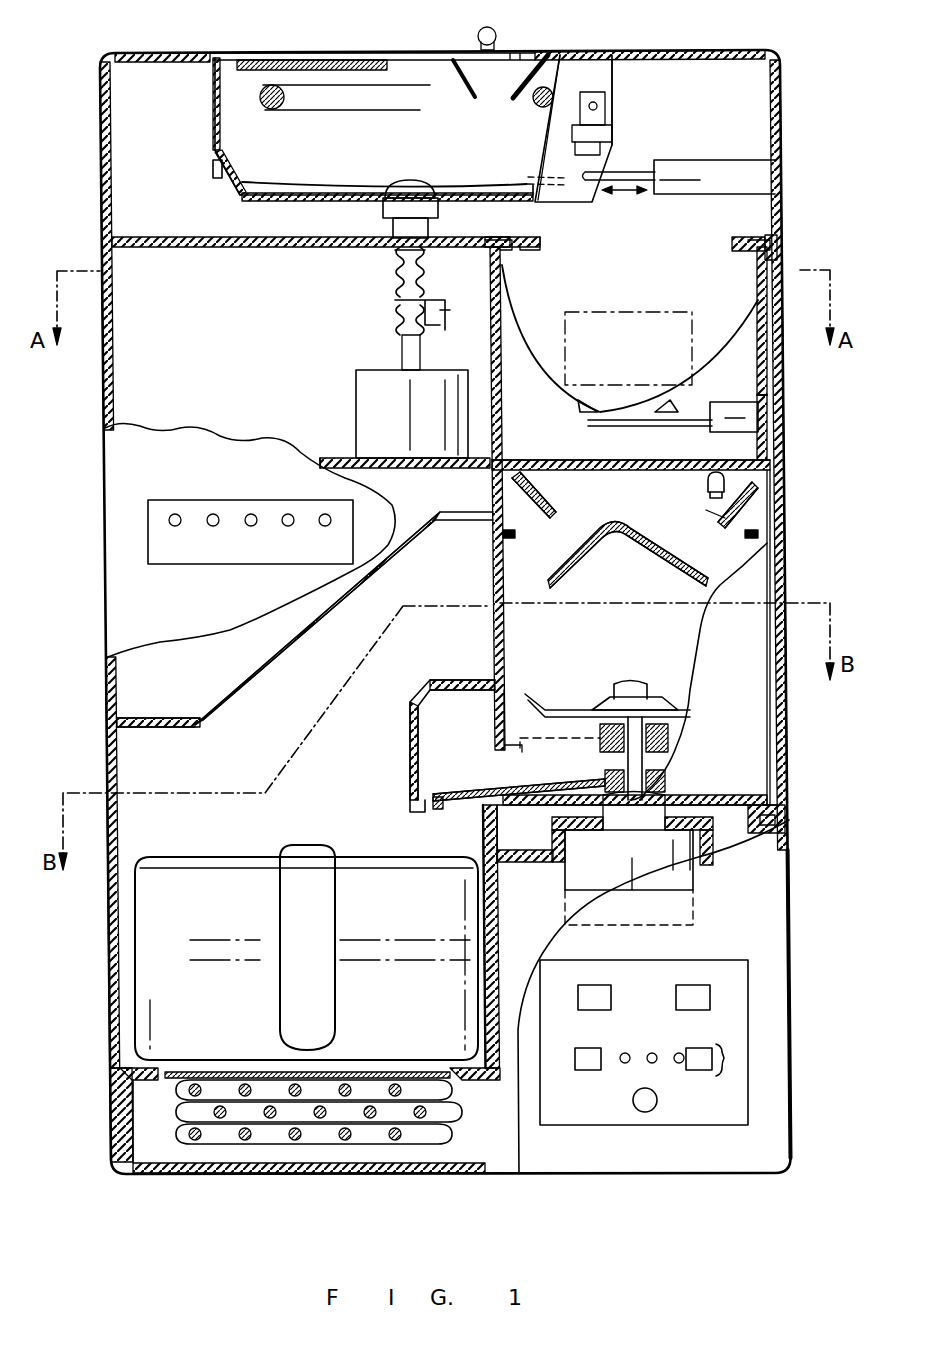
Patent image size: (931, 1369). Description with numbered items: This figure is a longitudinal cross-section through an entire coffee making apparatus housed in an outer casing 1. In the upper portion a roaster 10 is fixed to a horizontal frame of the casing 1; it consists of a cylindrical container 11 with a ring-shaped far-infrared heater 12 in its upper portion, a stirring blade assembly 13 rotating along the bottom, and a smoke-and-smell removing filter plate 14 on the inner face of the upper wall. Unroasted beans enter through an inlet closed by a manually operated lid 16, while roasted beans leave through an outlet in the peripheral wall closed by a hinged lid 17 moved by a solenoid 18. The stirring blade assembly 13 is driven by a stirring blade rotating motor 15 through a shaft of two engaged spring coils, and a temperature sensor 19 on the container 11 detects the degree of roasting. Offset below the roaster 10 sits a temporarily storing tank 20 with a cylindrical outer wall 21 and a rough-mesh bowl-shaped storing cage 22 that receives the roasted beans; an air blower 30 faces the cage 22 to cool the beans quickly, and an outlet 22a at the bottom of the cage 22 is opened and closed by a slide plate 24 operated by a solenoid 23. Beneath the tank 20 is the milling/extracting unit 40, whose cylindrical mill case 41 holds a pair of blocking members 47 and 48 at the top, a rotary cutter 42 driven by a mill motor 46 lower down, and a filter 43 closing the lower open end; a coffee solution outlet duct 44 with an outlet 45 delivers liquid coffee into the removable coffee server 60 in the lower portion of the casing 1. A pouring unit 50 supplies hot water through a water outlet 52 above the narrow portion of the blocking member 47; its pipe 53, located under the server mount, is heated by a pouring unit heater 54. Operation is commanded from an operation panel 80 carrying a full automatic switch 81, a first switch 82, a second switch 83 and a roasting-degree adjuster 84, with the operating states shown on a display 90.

The outer casing 1 is at (102, 160).
The roaster 10 is at (632, 100).
The cylindrical container 11 is at (215, 114).
The ring-shaped far-infrared heater 12 is at (352, 100).
The stirring blade assembly 13 is at (287, 180).
The smoke-and-smell removing filter plate 14 is at (287, 60).
The stirring blade rotating motor 15 is at (357, 396).
The lid 16 is at (500, 36).
The lid 17 is at (600, 165).
The solenoid 18 is at (718, 160).
The temperature sensor 19 is at (213, 174).
The temporarily storing tank 20 is at (716, 232).
The cylindrical outer wall 21 is at (762, 395).
The bowl-shaped storing cage 22 is at (744, 338).
The outlet 22a is at (590, 398).
The solenoid 23 is at (762, 424).
The slide plate 24 is at (625, 428).
The air blower 30 is at (610, 310).
The milling/extracting unit 40 is at (482, 622).
The cylindrical mill case 41 is at (492, 575).
The rotary cutter 42 is at (556, 704).
The filter 43 is at (535, 740).
The coffee solution outlet duct 44 is at (470, 796).
The outlet 45 is at (425, 812).
The mill motor 46 is at (575, 895).
The blocking member 47 is at (530, 500).
The blocking member 48 is at (612, 528).
The pouring unit 50 is at (706, 484).
The water outlet 52 is at (712, 500).
The pipe 53 is at (168, 1125).
The pouring unit heater 54 is at (225, 1148).
The coffee server 60 is at (150, 985).
The operation panel 80 is at (750, 986).
The full automatic switch 81 is at (648, 1112).
The first switch 82 is at (596, 985).
The second switch 83 is at (700, 985).
The adjuster 84 is at (728, 1058).
The display 90 is at (148, 535).